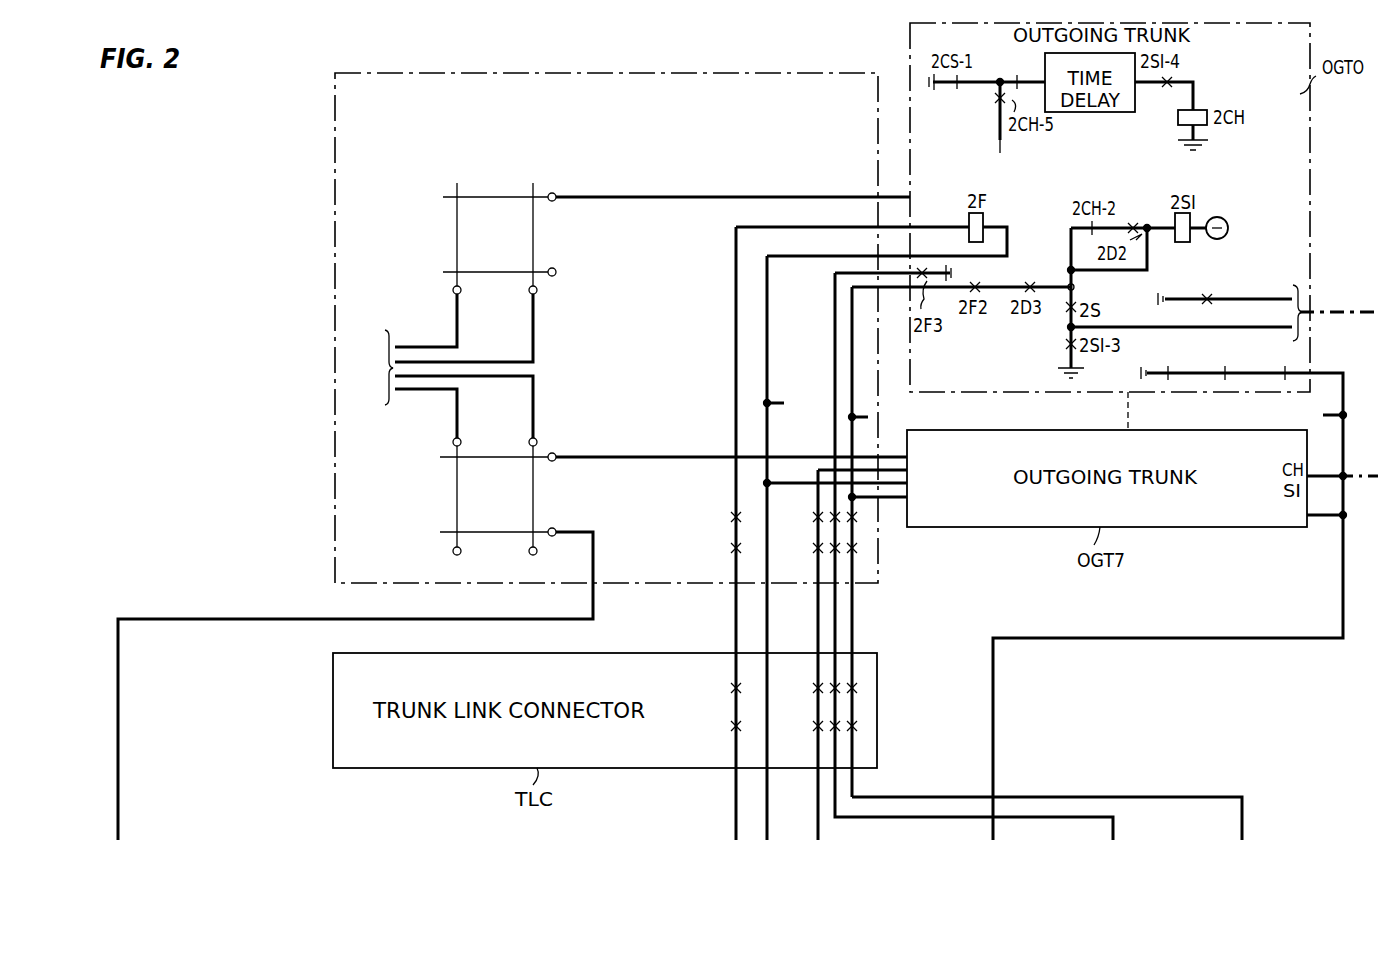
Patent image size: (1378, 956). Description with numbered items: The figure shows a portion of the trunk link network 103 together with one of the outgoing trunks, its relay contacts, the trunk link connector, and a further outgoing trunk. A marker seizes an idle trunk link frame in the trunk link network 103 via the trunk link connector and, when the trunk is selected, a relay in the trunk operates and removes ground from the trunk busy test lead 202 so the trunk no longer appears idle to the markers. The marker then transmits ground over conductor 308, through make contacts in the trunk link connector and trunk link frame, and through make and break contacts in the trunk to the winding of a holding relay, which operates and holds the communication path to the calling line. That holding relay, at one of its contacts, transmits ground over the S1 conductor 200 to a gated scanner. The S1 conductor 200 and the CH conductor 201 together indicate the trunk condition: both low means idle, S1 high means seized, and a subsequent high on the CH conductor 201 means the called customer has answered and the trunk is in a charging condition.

The trunk link network 103 is at (345, 138).
The S1 conductor 200 is at (1128, 327).
The CH conductor 201 is at (1243, 299).
The trunk busy test lead 202 is at (1028, 638).
The conductor 308 is at (1062, 797).